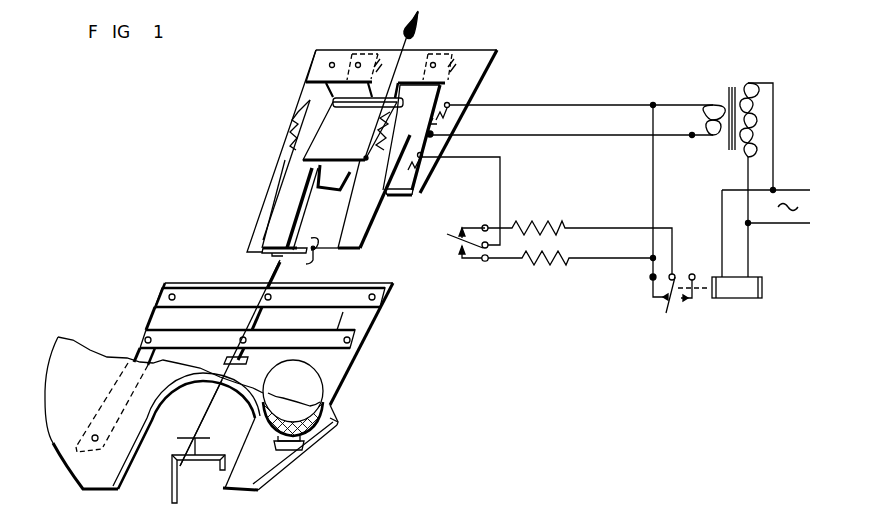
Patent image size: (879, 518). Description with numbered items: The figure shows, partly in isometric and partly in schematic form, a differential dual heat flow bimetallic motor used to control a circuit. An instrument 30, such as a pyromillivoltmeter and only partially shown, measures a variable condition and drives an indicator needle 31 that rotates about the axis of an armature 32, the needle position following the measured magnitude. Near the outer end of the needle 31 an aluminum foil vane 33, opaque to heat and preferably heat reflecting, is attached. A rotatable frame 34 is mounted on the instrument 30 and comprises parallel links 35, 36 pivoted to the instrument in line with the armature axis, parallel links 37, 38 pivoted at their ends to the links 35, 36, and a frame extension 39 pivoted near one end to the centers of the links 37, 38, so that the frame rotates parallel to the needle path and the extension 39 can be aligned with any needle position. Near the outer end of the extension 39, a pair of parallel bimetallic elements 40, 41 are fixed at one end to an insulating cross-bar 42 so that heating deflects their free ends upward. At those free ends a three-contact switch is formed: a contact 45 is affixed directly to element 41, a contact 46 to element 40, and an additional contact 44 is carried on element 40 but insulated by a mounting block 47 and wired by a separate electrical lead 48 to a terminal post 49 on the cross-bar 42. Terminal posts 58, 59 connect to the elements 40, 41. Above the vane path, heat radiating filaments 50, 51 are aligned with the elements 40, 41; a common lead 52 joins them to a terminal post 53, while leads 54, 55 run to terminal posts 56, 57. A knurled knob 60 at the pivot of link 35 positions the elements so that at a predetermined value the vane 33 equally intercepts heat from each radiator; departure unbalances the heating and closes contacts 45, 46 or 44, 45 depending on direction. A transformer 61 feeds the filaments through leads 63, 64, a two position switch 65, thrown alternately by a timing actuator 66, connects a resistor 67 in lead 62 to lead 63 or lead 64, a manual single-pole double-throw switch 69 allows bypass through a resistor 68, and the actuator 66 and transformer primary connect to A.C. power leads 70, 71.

The instrument 30 is at (273, 483).
The indicator needle 31 is at (207, 407).
The armature 32 is at (177, 492).
The aluminum foil vane 33 is at (333, 101).
The rotatable frame 34 is at (345, 312).
The parallel link 35 is at (384, 282).
The parallel link 36 is at (182, 280).
The parallel link 37 is at (224, 329).
The parallel link 38 is at (232, 284).
The frame extension 39 is at (272, 322).
The bimetallic element 40 is at (305, 198).
The bimetallic element 41 is at (373, 213).
The cross-bar 42 is at (451, 54).
The contact 44 is at (310, 266).
The contact 45 is at (316, 253).
The contact 46 is at (318, 238).
The mounting block 47 is at (272, 256).
The electrical lead 48 is at (263, 193).
The terminal post 49 is at (341, 42).
The heat radiating filament 50 is at (298, 117).
The heat radiating filament 51 is at (350, 146).
The common lead 52 is at (420, 165).
The terminal post 53 is at (423, 157).
The lead 54 is at (445, 114).
The lead 55 is at (433, 122).
The terminal post 56 is at (450, 104).
The terminal post 57 is at (432, 136).
The terminal post 58 is at (357, 58).
The terminal post 59 is at (437, 58).
The knurled knob 60 is at (320, 400).
The transformer 61 is at (740, 88).
The lead 62 is at (500, 175).
The lead 63 is at (568, 105).
The lead 64 is at (558, 135).
The two position switch 65 is at (652, 290).
The actuator 66 is at (716, 299).
The resistor 67 is at (529, 221).
The resistor 68 is at (532, 262).
The single-pole double-throw switch 69 is at (462, 258).
The A.C. power lead 70 is at (780, 190).
The A.C. power lead 71 is at (778, 223).